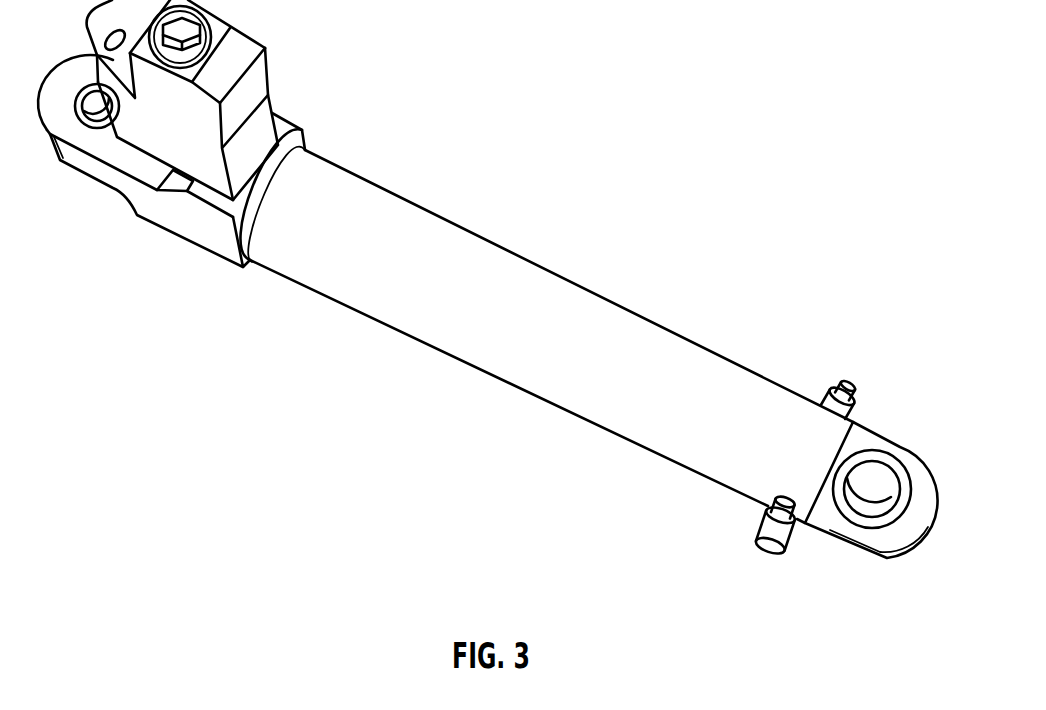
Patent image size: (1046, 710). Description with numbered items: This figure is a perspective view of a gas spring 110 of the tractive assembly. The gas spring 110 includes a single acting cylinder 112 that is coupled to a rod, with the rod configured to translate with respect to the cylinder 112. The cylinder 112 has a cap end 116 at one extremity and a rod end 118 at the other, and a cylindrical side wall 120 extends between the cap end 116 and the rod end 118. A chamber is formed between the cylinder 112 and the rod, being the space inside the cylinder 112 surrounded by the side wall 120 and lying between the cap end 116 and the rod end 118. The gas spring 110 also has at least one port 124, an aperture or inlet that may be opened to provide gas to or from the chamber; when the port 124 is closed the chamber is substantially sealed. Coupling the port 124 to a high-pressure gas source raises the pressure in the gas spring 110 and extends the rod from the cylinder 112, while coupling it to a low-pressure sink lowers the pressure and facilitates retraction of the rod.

The gas spring 110 is at (487, 300).
The single acting cylinder 112 is at (743, 398).
The cap end 116 is at (814, 567).
The rod end 118 is at (244, 291).
The side wall 120 is at (483, 393).
The port 124 is at (843, 381).